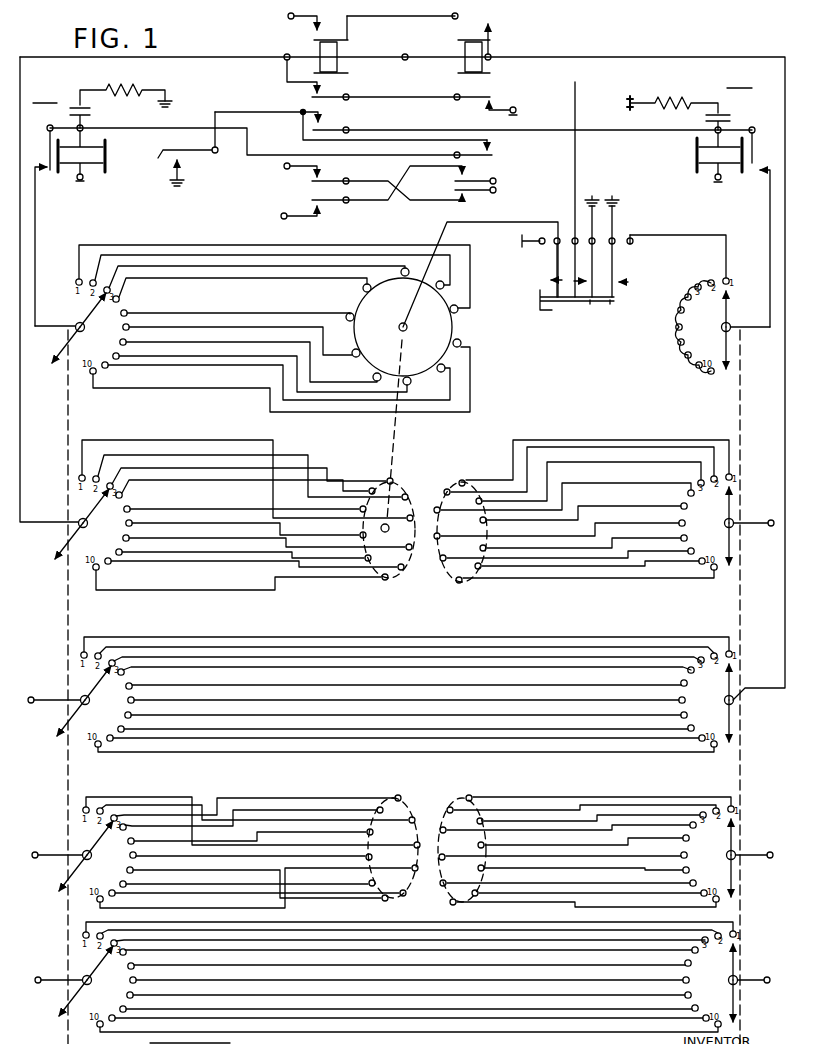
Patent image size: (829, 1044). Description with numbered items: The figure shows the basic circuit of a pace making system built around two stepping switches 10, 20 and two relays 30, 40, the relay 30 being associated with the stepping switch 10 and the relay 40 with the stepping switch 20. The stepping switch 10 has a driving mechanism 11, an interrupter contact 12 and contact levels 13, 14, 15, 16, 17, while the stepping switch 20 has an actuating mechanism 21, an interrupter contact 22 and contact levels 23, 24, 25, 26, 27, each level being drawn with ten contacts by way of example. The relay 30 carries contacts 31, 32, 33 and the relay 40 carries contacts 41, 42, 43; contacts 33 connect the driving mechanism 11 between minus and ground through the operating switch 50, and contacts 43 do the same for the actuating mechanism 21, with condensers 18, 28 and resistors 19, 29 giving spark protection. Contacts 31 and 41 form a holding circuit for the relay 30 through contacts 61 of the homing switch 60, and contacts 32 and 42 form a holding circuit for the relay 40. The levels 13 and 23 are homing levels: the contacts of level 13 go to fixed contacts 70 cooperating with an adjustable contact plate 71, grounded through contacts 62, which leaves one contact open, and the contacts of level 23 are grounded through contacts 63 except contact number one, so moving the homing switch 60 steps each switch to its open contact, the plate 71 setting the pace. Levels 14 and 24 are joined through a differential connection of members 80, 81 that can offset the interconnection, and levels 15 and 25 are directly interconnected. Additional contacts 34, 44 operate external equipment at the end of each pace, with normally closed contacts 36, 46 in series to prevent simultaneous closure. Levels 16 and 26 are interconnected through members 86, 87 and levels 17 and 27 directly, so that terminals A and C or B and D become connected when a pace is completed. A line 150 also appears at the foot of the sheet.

The stepping switch 10 is at (45, 95).
The driving mechanism 11 is at (96, 160).
The interrupter contact 12 is at (42, 172).
The contact level 13 is at (78, 300).
The contact level 14 is at (78, 498).
The contact level 15 is at (78, 668).
The contact level 16 is at (78, 836).
The contact level 17 is at (82, 960).
The condenser 18 is at (88, 112).
The resistor 19 is at (125, 90).
The stepping switch 20 is at (739, 80).
The actuating mechanism 21 is at (700, 154).
The interrupter contact 22 is at (762, 227).
The contact level 23 is at (732, 314).
The contact level 24 is at (732, 510).
The contact level 25 is at (736, 688).
The contact level 26 is at (738, 850).
The contact level 27 is at (740, 976).
The condenser 28 is at (728, 120).
The resistor 29 is at (702, 96).
The relay 30 is at (462, 52).
The contacts 31 is at (495, 25).
The contacts 32 is at (480, 104).
The contacts 33 is at (492, 150).
The contacts 34 is at (482, 180).
The contacts 36 is at (484, 196).
The relay 40 is at (335, 58).
The contacts 41 is at (305, 23).
The contacts 42 is at (328, 96).
The contacts 43 is at (330, 126).
The contacts 44 is at (326, 176).
The contacts 46 is at (322, 211).
The operating switch 50 is at (185, 163).
The homing switch 60 is at (608, 304).
The contacts 61 is at (578, 302).
The contacts 62 is at (548, 280).
The contacts 63 is at (620, 284).
The fixed contacts 70 is at (360, 300).
The adjustable contact plate 71 is at (458, 322).
The member 80 is at (382, 485).
The member 81 is at (450, 480).
The member 86 is at (386, 805).
The member 87 is at (472, 806).
The connecting line 150 is at (270, 1043).